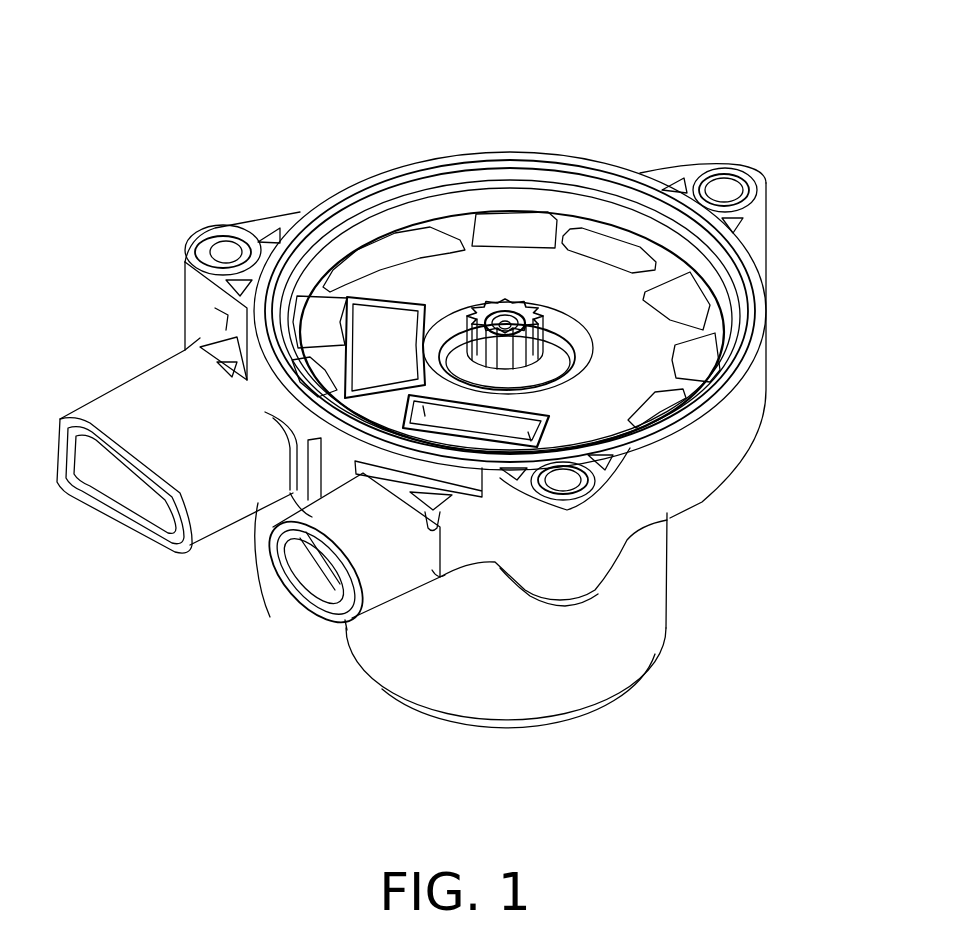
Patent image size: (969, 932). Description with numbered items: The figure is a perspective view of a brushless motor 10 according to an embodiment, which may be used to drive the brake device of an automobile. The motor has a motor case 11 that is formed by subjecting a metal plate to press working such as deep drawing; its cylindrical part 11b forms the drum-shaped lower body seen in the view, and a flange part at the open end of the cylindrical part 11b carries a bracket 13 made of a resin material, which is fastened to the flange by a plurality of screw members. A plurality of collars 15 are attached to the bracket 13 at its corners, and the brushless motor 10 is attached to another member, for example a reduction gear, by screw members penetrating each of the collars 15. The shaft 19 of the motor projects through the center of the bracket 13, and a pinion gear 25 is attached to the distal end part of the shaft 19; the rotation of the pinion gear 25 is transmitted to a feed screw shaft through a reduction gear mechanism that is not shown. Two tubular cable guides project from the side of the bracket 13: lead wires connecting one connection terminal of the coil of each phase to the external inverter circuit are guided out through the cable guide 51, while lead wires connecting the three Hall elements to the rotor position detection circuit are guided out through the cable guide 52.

The brushless motor 10 is at (499, 106).
The motor case 11 is at (647, 613).
The cylindrical part 11b is at (377, 663).
The bracket 13 is at (744, 397).
The collar 15 is at (228, 248).
The shaft 19 is at (510, 302).
The pinion gear 25 is at (470, 302).
The cable guide 51 is at (118, 410).
The cable guide 52 is at (280, 572).